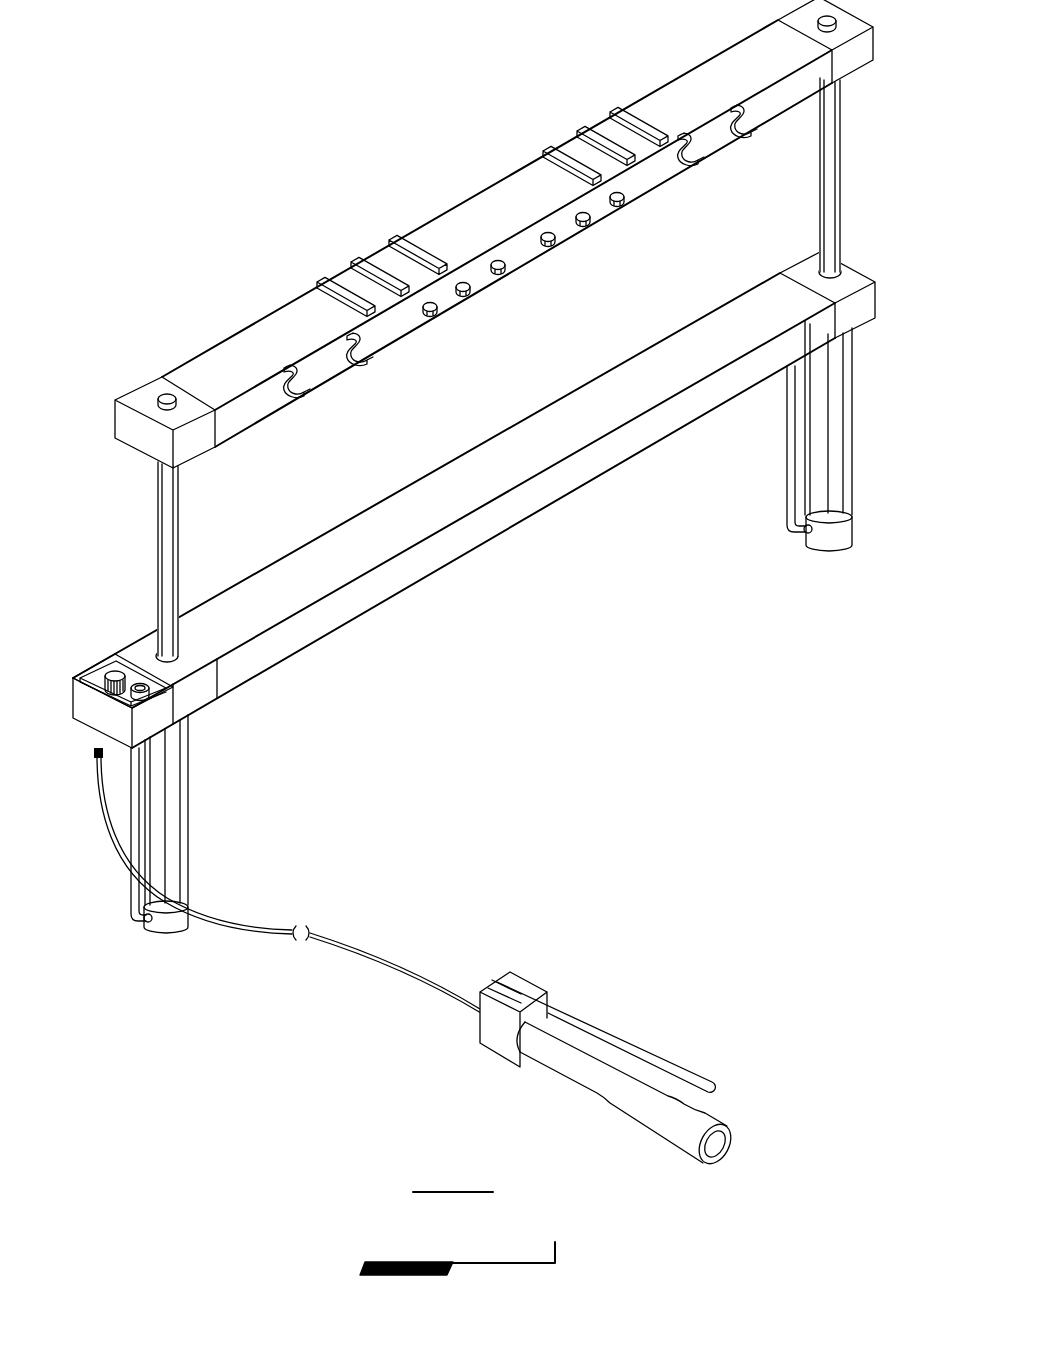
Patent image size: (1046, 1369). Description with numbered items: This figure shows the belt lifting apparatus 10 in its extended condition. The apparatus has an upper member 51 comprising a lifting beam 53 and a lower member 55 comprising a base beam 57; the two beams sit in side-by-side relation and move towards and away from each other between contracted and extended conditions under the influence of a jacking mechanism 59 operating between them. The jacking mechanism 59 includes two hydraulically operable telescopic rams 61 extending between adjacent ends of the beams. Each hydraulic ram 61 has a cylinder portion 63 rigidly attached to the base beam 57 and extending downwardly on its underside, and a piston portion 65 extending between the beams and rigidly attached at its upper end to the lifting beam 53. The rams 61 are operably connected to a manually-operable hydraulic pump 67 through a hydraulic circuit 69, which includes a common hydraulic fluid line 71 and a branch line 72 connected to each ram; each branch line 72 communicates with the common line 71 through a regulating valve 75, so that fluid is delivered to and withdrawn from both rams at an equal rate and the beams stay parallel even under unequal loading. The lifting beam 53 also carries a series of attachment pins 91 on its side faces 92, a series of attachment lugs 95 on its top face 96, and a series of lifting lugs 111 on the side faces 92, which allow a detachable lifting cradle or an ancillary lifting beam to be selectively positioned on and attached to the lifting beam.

The belt lifting apparatus 10 is at (215, 342).
The upper member 51 is at (643, 182).
The lifting beam 53 is at (568, 230).
The lower member 55 is at (508, 497).
The base beam 57 is at (366, 576).
The jacking mechanism 59 is at (156, 604).
The hydraulic ram 61 is at (188, 774).
The cylinder portion 63 is at (190, 847).
The piston portion 65 is at (158, 548).
The hydraulic pump 67 is at (600, 1034).
The hydraulic circuit 69 is at (273, 939).
The common hydraulic fluid line 71 is at (333, 933).
The branch line 72 is at (130, 894).
The regulating valve 75 is at (112, 669).
The attachment pin 91 is at (437, 311).
The side face 92 is at (246, 413).
The attachment lug 95 is at (419, 244).
The top face 96 is at (508, 207).
The lifting lug 111 is at (305, 379).